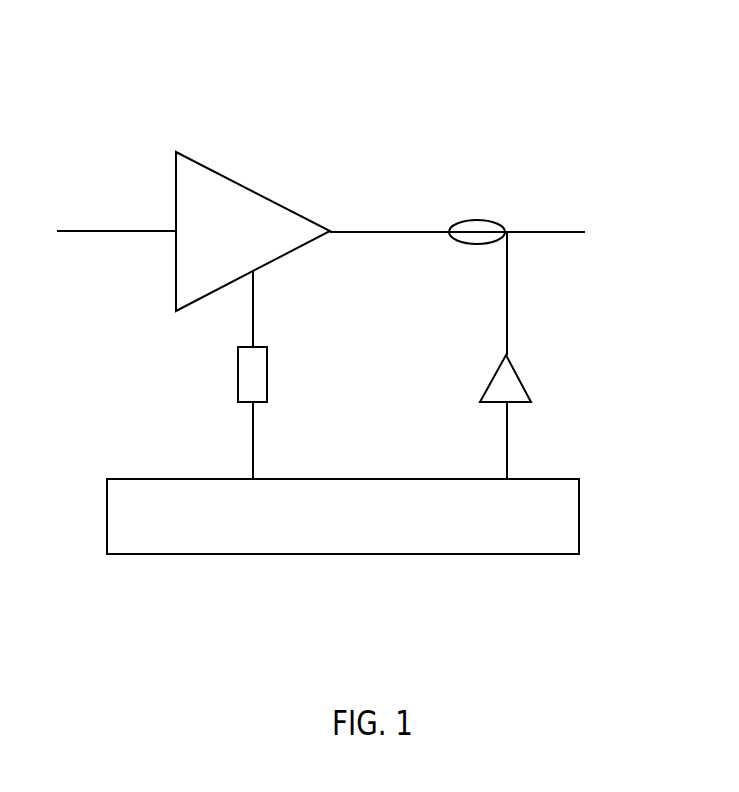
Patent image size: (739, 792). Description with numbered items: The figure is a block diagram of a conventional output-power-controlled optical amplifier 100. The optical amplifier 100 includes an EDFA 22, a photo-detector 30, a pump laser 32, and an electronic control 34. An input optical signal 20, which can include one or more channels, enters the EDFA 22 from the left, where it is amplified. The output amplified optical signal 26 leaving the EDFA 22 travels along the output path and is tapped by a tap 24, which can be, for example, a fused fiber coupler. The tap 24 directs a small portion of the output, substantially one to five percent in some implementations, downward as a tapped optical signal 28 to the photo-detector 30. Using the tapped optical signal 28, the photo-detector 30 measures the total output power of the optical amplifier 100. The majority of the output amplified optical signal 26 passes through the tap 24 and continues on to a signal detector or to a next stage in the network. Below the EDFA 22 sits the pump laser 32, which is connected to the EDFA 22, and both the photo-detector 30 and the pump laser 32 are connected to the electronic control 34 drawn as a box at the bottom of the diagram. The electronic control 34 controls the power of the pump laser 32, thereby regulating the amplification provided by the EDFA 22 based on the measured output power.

The optical amplifier 100 is at (174, 62).
The input optical signal 20 is at (92, 213).
The EDFA 22 is at (288, 255).
The tap 24 is at (453, 225).
The output amplified optical signal 26 is at (605, 213).
The tapped optical signal 28 is at (496, 268).
The photo-detector 30 is at (488, 380).
The pump laser 32 is at (267, 353).
The electronic control 34 is at (579, 498).